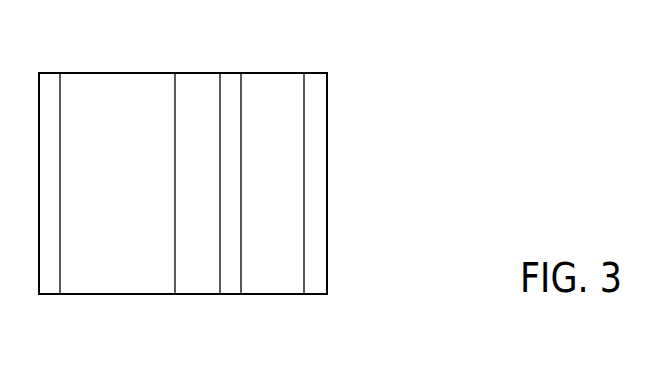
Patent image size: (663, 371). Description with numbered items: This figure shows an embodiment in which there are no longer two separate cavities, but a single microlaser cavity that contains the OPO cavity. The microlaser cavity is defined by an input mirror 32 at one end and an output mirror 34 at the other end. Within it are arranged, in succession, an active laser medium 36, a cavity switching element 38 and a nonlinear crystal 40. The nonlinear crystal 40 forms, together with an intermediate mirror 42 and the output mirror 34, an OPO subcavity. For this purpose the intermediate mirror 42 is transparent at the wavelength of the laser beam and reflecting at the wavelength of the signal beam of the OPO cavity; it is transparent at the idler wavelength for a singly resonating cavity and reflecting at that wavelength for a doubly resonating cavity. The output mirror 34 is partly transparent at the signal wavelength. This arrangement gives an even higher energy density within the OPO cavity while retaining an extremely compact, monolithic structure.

The input mirror 32 is at (46, 74).
The output mirror 34 is at (315, 290).
The active laser medium 36 is at (110, 295).
The cavity switching element 38 is at (190, 76).
The nonlinear crystal 40 is at (267, 78).
The intermediate mirror 42 is at (225, 290).